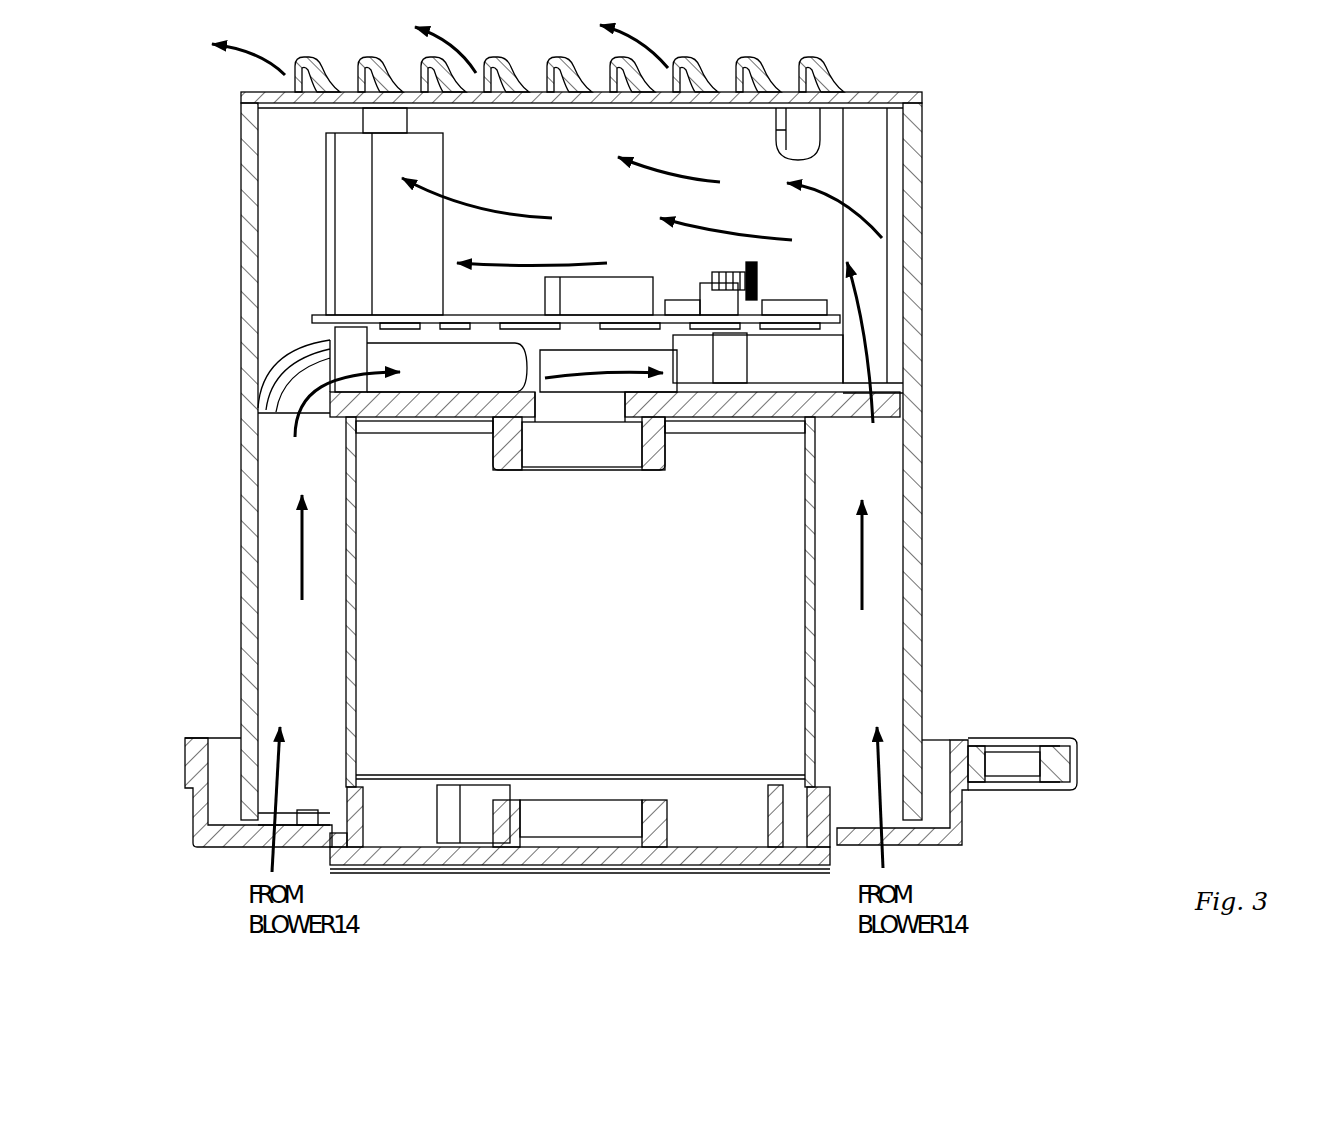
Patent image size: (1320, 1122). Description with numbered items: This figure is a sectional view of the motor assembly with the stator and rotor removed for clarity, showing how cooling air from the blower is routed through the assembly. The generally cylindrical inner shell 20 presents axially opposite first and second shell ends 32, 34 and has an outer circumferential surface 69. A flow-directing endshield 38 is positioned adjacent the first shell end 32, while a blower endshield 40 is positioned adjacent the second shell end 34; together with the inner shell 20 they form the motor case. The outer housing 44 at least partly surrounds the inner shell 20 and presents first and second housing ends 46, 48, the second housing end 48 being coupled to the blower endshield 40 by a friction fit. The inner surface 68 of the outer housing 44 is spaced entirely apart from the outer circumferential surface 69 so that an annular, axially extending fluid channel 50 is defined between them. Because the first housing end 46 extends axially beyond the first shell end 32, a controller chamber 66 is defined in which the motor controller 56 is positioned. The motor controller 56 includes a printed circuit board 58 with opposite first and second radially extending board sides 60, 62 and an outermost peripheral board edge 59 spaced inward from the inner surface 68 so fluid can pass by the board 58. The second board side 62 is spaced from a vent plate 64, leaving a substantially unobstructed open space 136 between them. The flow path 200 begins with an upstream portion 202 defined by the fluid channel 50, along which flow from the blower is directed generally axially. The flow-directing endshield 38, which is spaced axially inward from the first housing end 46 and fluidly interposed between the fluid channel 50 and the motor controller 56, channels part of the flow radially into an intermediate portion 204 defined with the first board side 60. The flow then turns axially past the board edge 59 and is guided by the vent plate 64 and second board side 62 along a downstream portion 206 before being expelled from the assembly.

The inner shell 20 is at (815, 633).
The first shell end 32 is at (322, 442).
The second shell end 34 is at (992, 846).
The flow-directing endshield 38 is at (718, 434).
The blower endshield 40 is at (1057, 738).
The outer housing 44 is at (918, 180).
The first housing end 46 is at (940, 97).
The second housing end 48 is at (576, 792).
The fluid channel 50 is at (303, 656).
The motor controller 56 is at (322, 185).
The printed circuit board 58 is at (837, 318).
The outermost peripheral board edge 59 is at (312, 322).
The first board side 60 is at (817, 333).
The second board side 62 is at (310, 305).
The vent plate 64 is at (828, 72).
The controller chamber 66 is at (300, 150).
The inner surface 68 is at (262, 597).
The outer circumferential surface 69 is at (338, 612).
The open space 136 is at (693, 150).
The flow path 200 is at (270, 856).
The upstream portion 202 is at (300, 548).
The intermediate portion 204 is at (603, 380).
The downstream portion 206 is at (555, 277).